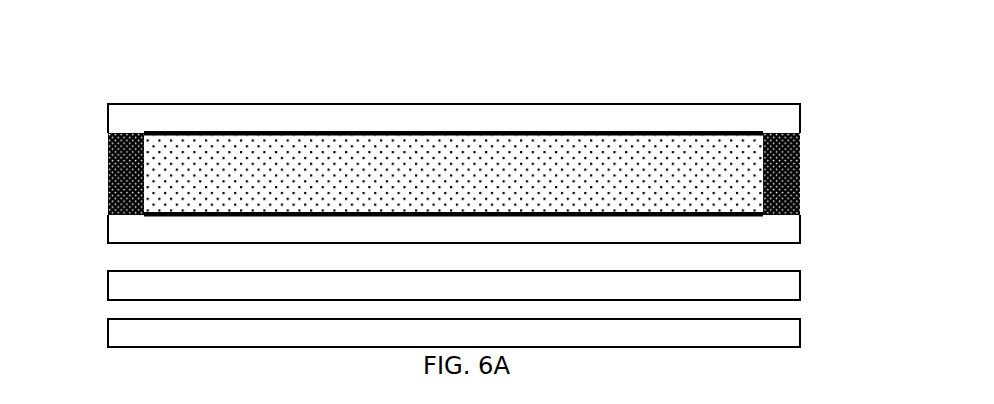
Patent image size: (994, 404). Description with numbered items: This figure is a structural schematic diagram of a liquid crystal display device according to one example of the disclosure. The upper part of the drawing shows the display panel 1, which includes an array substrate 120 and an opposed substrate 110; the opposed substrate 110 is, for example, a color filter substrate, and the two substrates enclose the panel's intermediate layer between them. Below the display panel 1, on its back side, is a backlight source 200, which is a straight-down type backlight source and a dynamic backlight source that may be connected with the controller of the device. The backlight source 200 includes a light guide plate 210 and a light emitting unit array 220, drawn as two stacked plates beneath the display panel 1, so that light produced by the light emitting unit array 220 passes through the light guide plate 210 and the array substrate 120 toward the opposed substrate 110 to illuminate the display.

The display panel 1 is at (827, 103).
The opposed substrate 110 is at (547, 120).
The array substrate 120 is at (766, 232).
The backlight source 200 is at (829, 308).
The light guide plate 210 is at (147, 290).
The light emitting unit array 220 is at (128, 333).